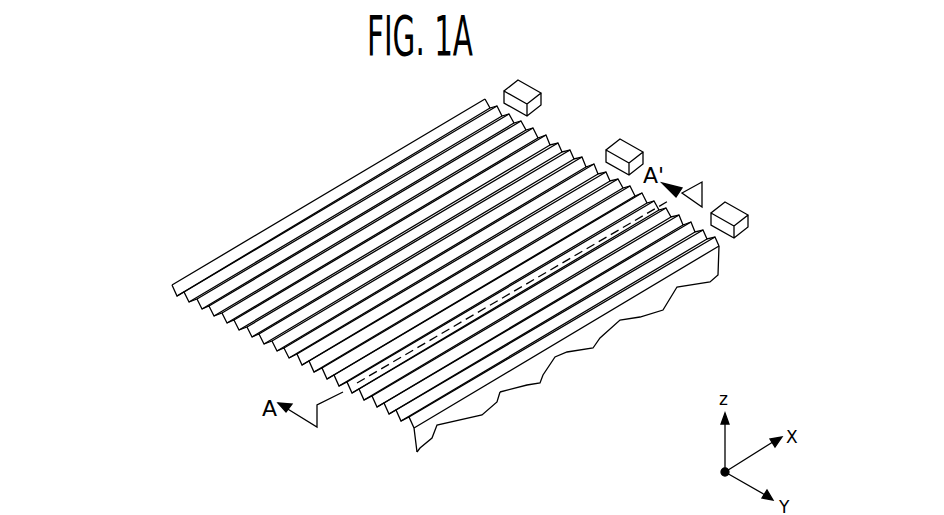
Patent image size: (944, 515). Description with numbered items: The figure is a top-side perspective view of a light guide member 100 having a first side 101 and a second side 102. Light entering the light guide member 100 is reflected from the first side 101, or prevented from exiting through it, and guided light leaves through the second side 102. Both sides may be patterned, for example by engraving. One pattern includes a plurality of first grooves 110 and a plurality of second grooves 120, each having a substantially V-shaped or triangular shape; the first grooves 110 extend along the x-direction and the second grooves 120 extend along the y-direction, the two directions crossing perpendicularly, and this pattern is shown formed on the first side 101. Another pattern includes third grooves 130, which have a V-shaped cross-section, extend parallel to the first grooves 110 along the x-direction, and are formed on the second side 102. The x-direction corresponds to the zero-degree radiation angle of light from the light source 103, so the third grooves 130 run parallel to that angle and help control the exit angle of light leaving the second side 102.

The light guide member 100 is at (88, 207).
The first side 101 is at (540, 383).
The second side 102 is at (317, 232).
The light source 103 is at (745, 232).
The first grooves 110 is at (360, 416).
The second grooves 120 is at (458, 430).
The third grooves 130 is at (260, 331).